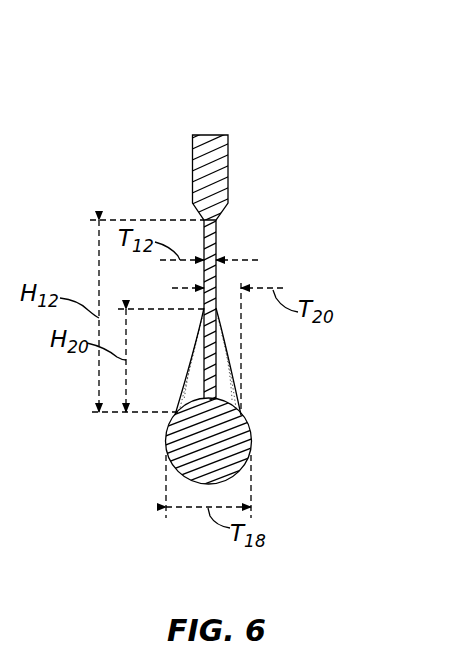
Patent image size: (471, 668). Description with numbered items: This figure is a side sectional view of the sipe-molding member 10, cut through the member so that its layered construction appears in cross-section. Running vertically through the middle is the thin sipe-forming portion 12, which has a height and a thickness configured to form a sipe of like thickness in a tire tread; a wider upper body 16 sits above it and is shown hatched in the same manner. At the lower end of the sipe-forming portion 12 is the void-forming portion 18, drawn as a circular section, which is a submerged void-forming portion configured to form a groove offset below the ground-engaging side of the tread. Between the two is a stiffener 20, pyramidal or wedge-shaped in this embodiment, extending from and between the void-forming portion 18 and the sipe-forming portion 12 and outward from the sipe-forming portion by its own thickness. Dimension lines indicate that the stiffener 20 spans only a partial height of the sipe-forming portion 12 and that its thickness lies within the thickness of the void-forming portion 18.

The sipe-molding member 10 is at (265, 76).
The sipe-forming portion 12 is at (217, 239).
The upper block portion 16 is at (220, 160).
The void-forming portion 18 is at (252, 437).
The stiffener 20 is at (208, 361).